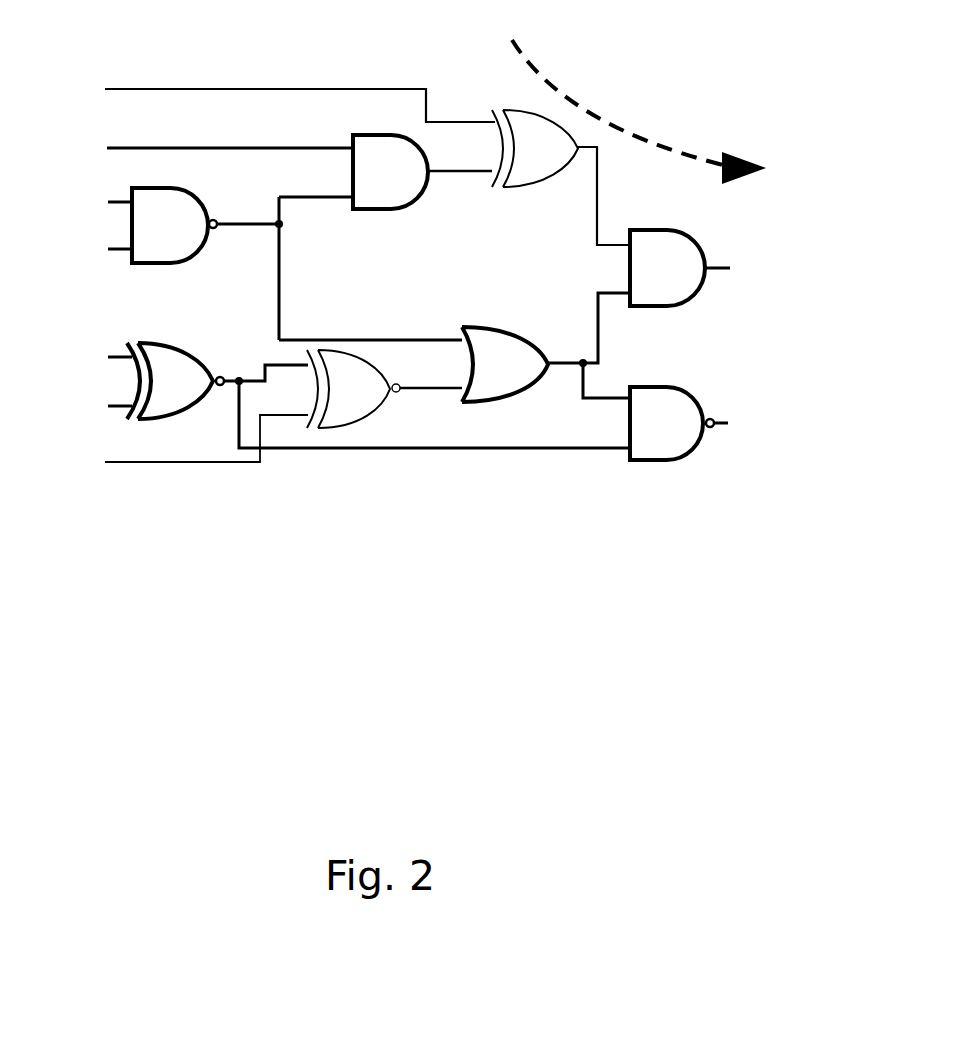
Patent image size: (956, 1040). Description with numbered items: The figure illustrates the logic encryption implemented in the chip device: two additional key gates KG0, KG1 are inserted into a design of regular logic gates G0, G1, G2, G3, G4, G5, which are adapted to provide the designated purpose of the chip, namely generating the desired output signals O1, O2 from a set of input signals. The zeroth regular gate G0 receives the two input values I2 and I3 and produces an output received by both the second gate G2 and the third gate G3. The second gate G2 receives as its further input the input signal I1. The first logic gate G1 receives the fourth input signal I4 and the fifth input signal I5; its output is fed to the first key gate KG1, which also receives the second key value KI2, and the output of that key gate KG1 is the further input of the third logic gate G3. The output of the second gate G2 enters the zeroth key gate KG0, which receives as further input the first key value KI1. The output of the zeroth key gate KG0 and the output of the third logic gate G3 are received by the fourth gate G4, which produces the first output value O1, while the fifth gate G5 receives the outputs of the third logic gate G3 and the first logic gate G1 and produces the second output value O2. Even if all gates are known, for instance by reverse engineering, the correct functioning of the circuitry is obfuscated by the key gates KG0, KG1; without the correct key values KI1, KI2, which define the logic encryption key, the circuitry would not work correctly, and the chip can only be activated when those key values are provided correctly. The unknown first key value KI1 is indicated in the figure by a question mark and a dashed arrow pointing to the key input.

The zeroth regular gate G0 is at (174, 225).
The first logic gate G1 is at (175, 381).
The second gate G2 is at (390, 172).
The third logic gate G3 is at (505, 364).
The fourth gate G4 is at (667, 268).
The fifth gate G5 is at (672, 423).
The zeroth key gate KG0 is at (535, 148).
The first key gate KG1 is at (353, 389).
The input signal I1 is at (207, 148).
The input value I2 is at (97, 198).
The input value I3 is at (97, 250).
The fourth input signal I4 is at (97, 358).
The fifth input signal I5 is at (97, 405).
The first key value KI1 is at (435, 97).
The second key value KI2 is at (179, 445).
The first output value O1 is at (745, 271).
The second output value O2 is at (749, 426).